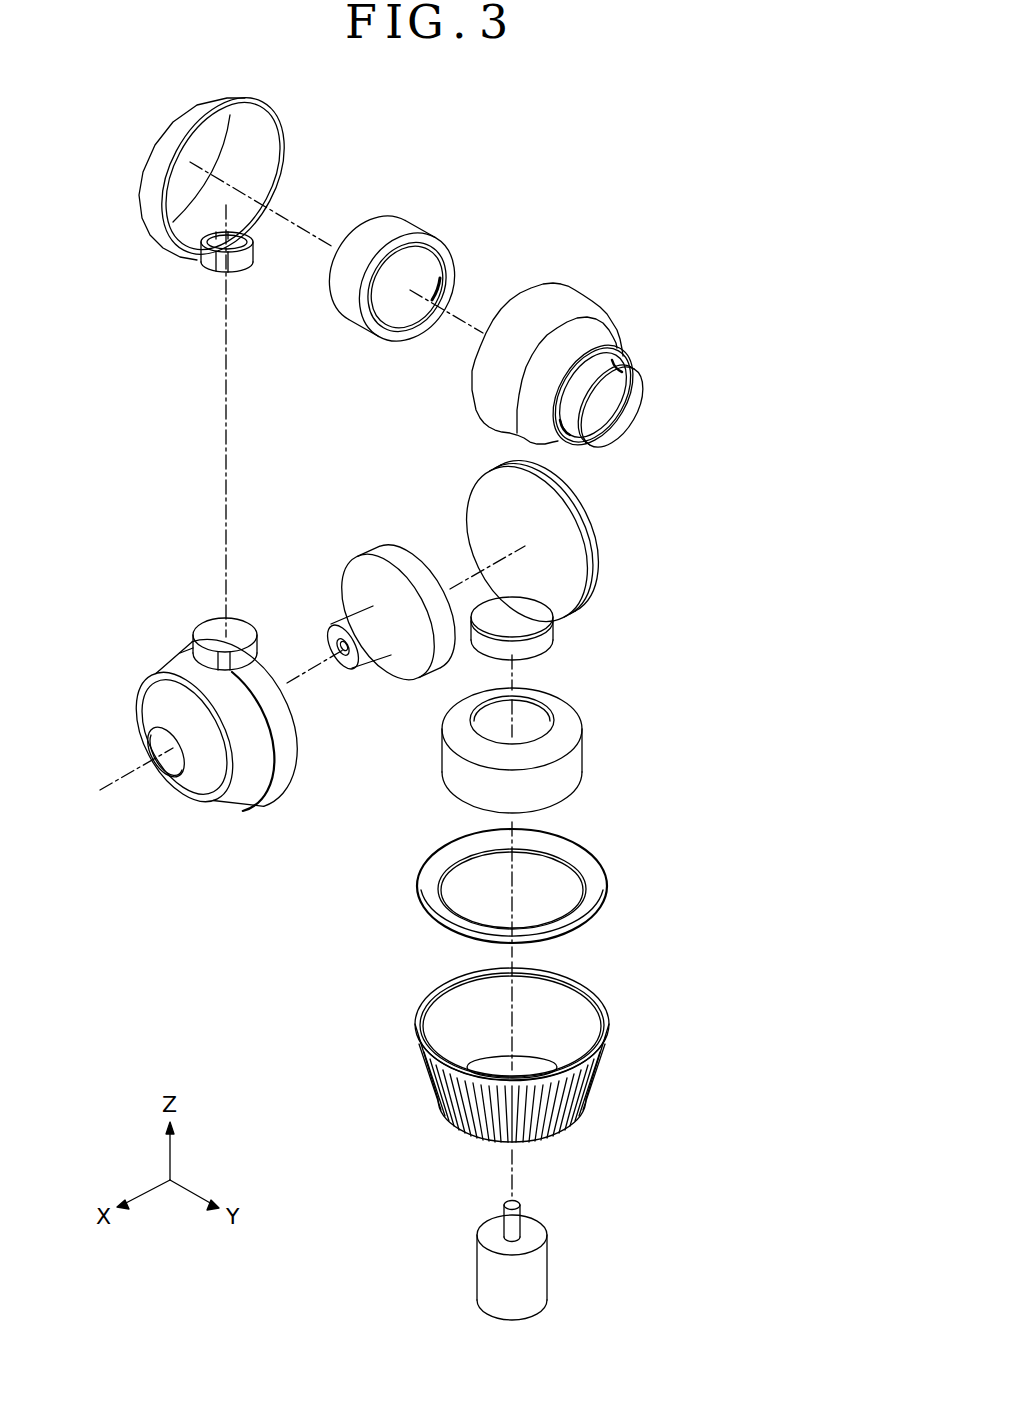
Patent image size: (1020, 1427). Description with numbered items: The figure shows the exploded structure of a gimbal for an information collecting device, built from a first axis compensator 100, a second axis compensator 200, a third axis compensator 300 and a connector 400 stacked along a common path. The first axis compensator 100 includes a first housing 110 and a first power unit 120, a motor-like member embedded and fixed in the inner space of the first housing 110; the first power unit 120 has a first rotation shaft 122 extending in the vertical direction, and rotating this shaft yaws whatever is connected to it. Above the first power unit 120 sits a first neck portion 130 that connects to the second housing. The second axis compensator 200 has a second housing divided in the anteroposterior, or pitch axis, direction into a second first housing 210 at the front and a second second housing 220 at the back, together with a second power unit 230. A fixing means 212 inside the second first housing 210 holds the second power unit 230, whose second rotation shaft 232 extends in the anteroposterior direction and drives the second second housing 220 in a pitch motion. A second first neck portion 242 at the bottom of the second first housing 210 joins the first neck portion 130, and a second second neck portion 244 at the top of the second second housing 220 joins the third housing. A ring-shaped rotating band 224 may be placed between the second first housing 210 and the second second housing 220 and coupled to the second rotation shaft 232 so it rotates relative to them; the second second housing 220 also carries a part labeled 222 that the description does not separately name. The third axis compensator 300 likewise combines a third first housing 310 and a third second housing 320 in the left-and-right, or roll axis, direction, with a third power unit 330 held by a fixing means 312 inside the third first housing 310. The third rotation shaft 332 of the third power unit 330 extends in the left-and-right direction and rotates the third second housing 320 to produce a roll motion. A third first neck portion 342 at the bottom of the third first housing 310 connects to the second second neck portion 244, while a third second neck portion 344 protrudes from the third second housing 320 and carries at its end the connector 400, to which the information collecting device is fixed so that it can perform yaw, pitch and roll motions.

The first axis compensator 100 is at (690, 853).
The first housing 110 is at (618, 887).
The first power unit 120 is at (548, 1265).
The first rotation shaft 122 is at (520, 1208).
The first neck portion 130 is at (583, 760).
The second axis compensator 200 is at (660, 579).
The second first housing 210 is at (597, 548).
The fixing means 212 is at (490, 495).
The second second housing 220 is at (172, 802).
The front face 222 is at (237, 793).
The rotating band 224 is at (280, 772).
The second power unit 230 is at (358, 544).
The second rotation shaft 232 is at (370, 650).
The second first neck portion 242 is at (548, 650).
The second second neck portion 244 is at (210, 632).
The third axis compensator 300 is at (646, 298).
The third first housing 310 is at (148, 218).
The fixing means 312 is at (218, 147).
The third second housing 320 is at (580, 292).
The third power unit 330 is at (388, 228).
The third rotation shaft 332 is at (445, 250).
The third first neck portion 342 is at (207, 270).
The third second neck portion 344 is at (632, 368).
The connector 400 is at (627, 406).